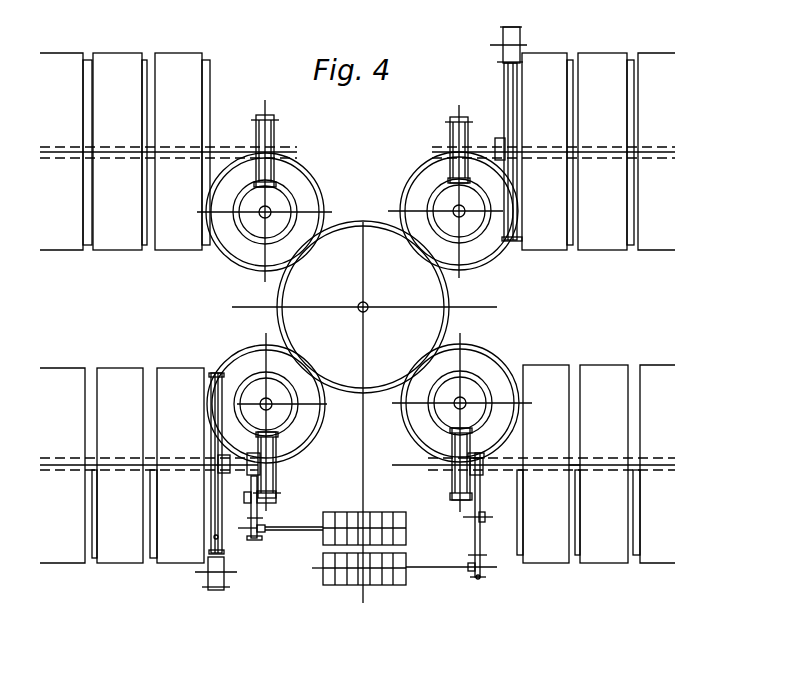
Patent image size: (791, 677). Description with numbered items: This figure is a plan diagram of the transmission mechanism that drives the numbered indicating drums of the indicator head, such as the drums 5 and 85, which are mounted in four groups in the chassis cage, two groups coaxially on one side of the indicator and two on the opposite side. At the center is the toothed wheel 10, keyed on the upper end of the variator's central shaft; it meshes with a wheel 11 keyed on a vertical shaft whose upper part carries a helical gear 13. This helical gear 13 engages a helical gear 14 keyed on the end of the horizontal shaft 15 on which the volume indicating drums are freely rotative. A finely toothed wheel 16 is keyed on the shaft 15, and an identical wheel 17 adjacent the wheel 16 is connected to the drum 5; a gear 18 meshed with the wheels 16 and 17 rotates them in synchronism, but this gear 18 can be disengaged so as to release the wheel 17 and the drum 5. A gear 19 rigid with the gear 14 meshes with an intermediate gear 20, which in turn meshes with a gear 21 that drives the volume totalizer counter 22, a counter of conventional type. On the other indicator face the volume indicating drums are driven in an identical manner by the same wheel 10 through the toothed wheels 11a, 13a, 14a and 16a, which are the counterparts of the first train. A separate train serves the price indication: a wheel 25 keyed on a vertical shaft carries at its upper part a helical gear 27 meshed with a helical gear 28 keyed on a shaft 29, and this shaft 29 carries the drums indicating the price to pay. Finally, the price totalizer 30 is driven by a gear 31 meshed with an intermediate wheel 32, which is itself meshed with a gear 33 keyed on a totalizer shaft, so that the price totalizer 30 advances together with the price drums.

The numbered drum 5 is at (181, 563).
The numbered drum 85 is at (134, 563).
The toothed wheel 10 is at (318, 281).
The wheel 11 is at (255, 352).
The toothed wheel 11a is at (420, 178).
The helical gear 13 is at (292, 427).
The toothed wheel 13a is at (481, 236).
The helical gear 14 is at (272, 493).
The toothed wheel 14a is at (456, 125).
The horizontal shaft 15 is at (150, 462).
The finely toothed wheel 16 is at (219, 545).
The toothed wheel 16a is at (510, 95).
The wheel 17 is at (208, 537).
The gear 18 is at (219, 592).
The gear 19 is at (248, 473).
The intermediate gear 20 is at (262, 511).
The gear 21 is at (258, 540).
The volume totalizer counter 22 is at (388, 520).
The wheel 25 is at (505, 370).
The helical gear 27 is at (468, 377).
The helical gear 28 is at (458, 489).
The shaft 29 is at (578, 460).
The price totalizer 30 is at (378, 580).
The gear 31 is at (478, 472).
The intermediate wheel 32 is at (477, 540).
The gear 33 is at (478, 577).